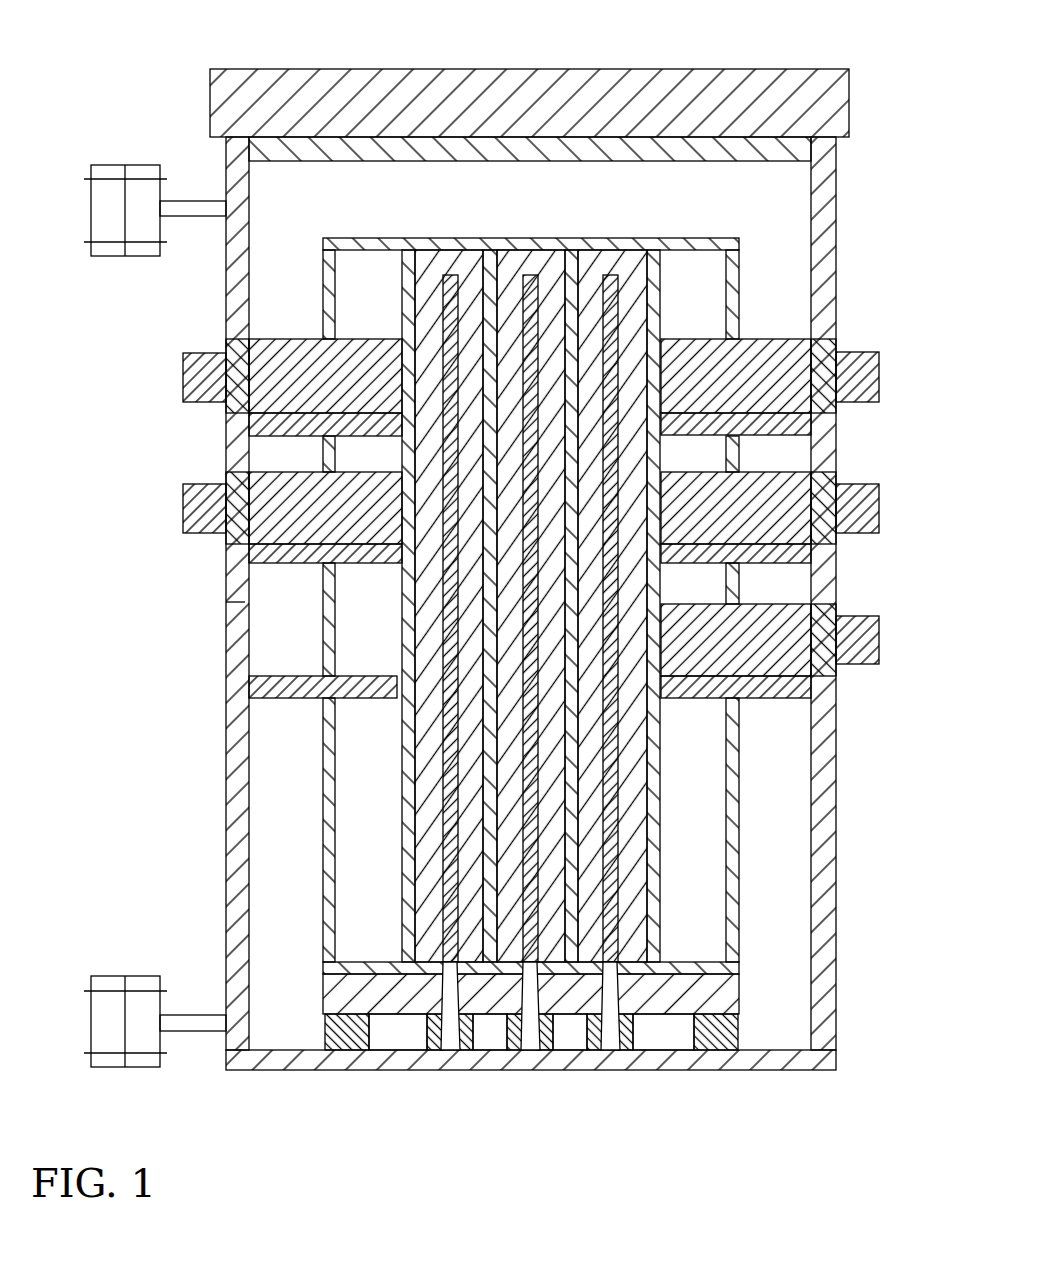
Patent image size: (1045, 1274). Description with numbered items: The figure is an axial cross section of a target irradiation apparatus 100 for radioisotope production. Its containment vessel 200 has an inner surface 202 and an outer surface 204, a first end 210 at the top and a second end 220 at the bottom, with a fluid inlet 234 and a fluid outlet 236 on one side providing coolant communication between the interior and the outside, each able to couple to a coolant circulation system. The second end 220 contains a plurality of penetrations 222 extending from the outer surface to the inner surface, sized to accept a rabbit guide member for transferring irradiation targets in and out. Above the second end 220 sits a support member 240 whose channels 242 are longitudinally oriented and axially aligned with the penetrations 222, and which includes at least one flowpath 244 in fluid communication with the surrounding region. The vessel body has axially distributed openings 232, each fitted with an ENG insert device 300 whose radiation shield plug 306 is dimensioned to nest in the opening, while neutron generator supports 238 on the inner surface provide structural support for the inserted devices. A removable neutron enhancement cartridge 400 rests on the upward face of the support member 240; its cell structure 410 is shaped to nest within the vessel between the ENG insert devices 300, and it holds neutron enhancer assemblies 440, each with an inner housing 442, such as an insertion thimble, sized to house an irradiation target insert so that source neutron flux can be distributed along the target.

The target irradiation apparatus 100 is at (151, 84).
The containment vessel 200 is at (858, 101).
The inner surface 202 is at (811, 226).
The outer surface 204 is at (836, 216).
The first end 210 is at (534, 69).
The second end 220 is at (694, 1060).
The penetrations 222 is at (611, 1060).
The openings 232 is at (237, 603).
The fluid inlet 234 is at (110, 1058).
The fluid outlet 236 is at (141, 256).
The neutron generator supports 238 is at (766, 698).
The support member 240 is at (335, 993).
The channels 242 is at (462, 1053).
The flowpath 244 is at (388, 1034).
The ENG insert devices 300 is at (198, 520).
The radiation shield plug 306 is at (234, 477).
The removable neutron enhancement cartridge 400 is at (752, 850).
The cell structure 410 is at (661, 922).
The neutron enhancer assembly 440 is at (426, 745).
The inner housing 442 is at (443, 854).